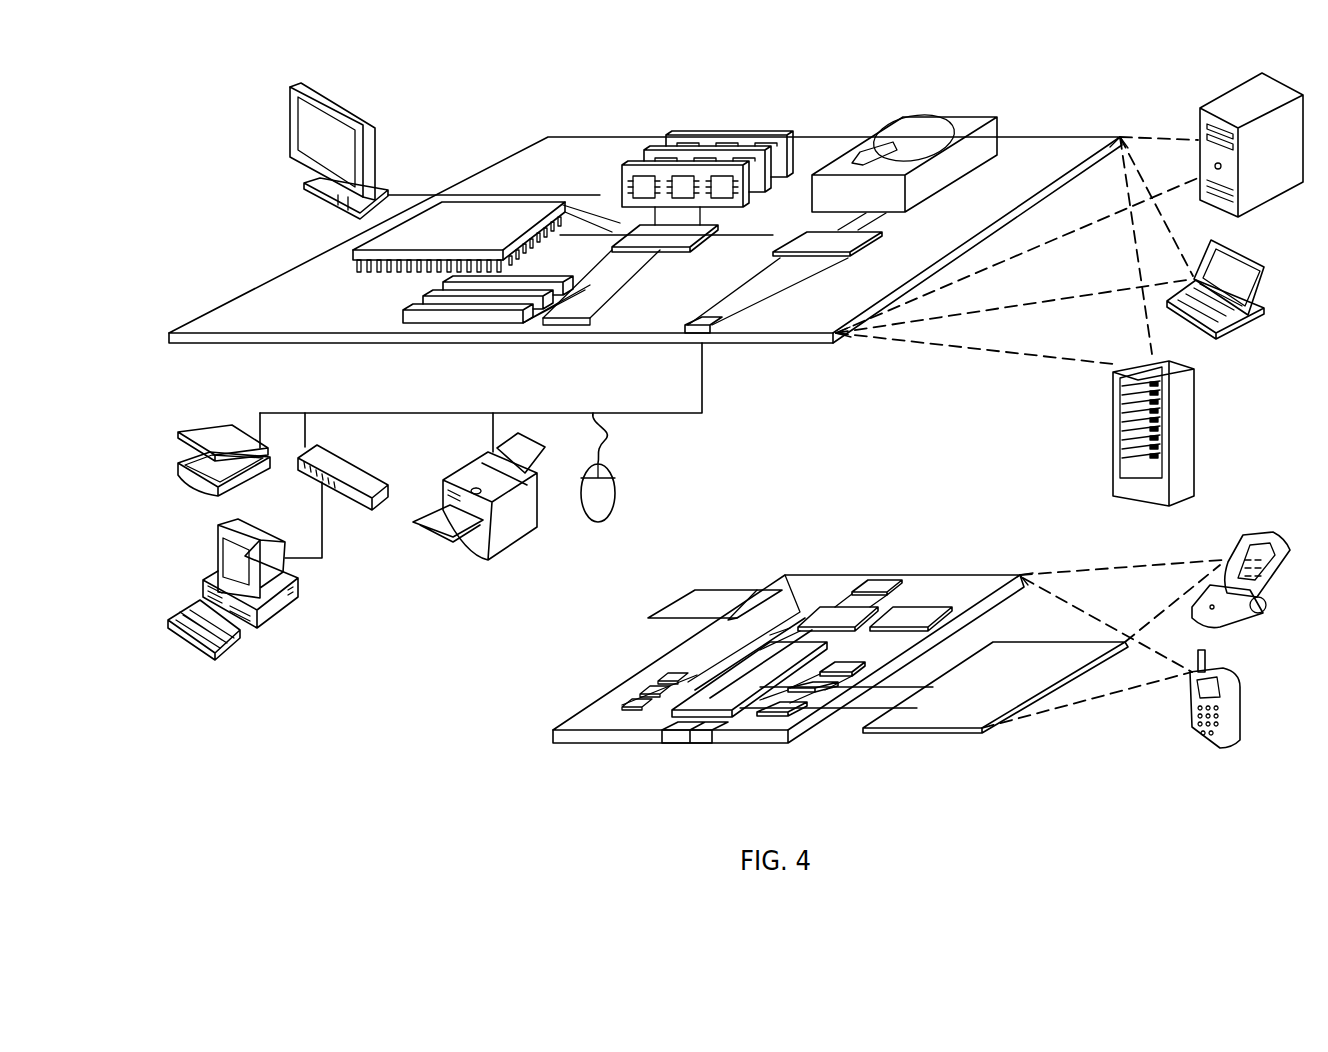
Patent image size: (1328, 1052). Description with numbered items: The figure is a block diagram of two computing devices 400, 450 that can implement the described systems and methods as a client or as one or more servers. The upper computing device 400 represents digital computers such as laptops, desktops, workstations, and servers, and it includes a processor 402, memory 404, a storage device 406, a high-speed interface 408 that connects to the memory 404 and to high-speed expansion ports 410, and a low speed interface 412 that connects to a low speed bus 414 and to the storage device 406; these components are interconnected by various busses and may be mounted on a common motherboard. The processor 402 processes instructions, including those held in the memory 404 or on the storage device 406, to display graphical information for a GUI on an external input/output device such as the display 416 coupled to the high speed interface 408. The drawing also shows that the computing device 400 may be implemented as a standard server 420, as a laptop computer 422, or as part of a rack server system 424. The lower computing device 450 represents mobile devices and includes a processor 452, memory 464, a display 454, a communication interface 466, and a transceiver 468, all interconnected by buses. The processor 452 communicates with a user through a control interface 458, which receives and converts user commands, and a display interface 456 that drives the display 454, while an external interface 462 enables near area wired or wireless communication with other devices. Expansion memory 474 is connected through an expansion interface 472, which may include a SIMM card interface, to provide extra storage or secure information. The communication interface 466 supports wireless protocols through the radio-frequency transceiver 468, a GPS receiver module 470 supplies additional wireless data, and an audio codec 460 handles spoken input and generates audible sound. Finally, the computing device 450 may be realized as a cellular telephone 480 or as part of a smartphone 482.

The computing device 400 is at (478, 104).
The processor 402 is at (353, 250).
The memory 404 is at (670, 130).
The storage device 406 is at (903, 118).
The high-speed interface 408 is at (640, 233).
The high-speed expansion ports 410 is at (410, 306).
The low speed interface 412 is at (807, 235).
The low speed bus 414 is at (720, 335).
The display 416 is at (289, 87).
The standard server 420 is at (1198, 123).
The laptop computer 422 is at (1266, 256).
The rack server system 424 is at (1113, 455).
The computing device 450 is at (527, 746).
The processor 452 is at (722, 705).
The display 454 is at (948, 716).
The display interface 456 is at (787, 704).
The control interface 458 is at (825, 687).
The audio codec 460 is at (847, 665).
The external interface 462 is at (683, 731).
The memory 464 is at (635, 687).
The communication interface 466 is at (835, 610).
The transceiver 468 is at (915, 610).
The GPS receiver module 470 is at (883, 582).
The expansion interface 472 is at (757, 592).
The expansion memory 474 is at (690, 592).
The cellular telephone 480 is at (1243, 540).
The smartphone 482 is at (1185, 708).